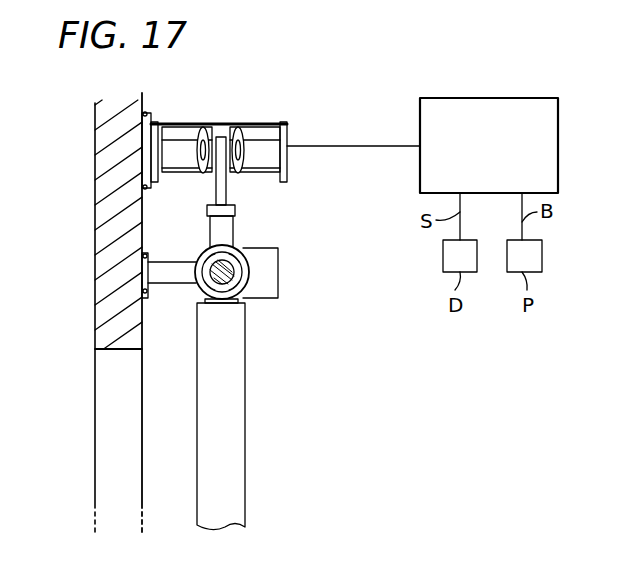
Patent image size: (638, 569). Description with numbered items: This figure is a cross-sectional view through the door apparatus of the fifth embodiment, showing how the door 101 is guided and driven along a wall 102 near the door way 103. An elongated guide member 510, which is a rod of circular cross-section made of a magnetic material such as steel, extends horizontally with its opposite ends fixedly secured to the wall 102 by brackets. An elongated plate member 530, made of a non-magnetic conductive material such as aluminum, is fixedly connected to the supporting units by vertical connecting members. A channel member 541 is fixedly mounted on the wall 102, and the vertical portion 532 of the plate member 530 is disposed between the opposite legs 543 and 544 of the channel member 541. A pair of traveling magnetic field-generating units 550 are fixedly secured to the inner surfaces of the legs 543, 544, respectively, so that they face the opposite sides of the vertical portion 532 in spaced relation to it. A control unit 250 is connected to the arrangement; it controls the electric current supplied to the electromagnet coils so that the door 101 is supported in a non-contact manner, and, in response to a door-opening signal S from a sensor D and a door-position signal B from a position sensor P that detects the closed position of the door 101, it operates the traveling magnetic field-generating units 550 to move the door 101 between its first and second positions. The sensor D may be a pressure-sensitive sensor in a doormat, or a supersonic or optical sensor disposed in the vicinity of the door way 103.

The door 101 is at (247, 388).
The wall 102 is at (95, 140).
The door way 103 is at (118, 349).
The control unit 250 is at (487, 98).
The guide member 510 is at (198, 292).
The plate member 530 is at (210, 192).
The vertical portion 532 is at (221, 137).
The channel member 541 is at (289, 133).
The leg 543 is at (153, 155).
The leg 544 is at (287, 167).
The traveling magnetic field-generating units 550 is at (190, 168).